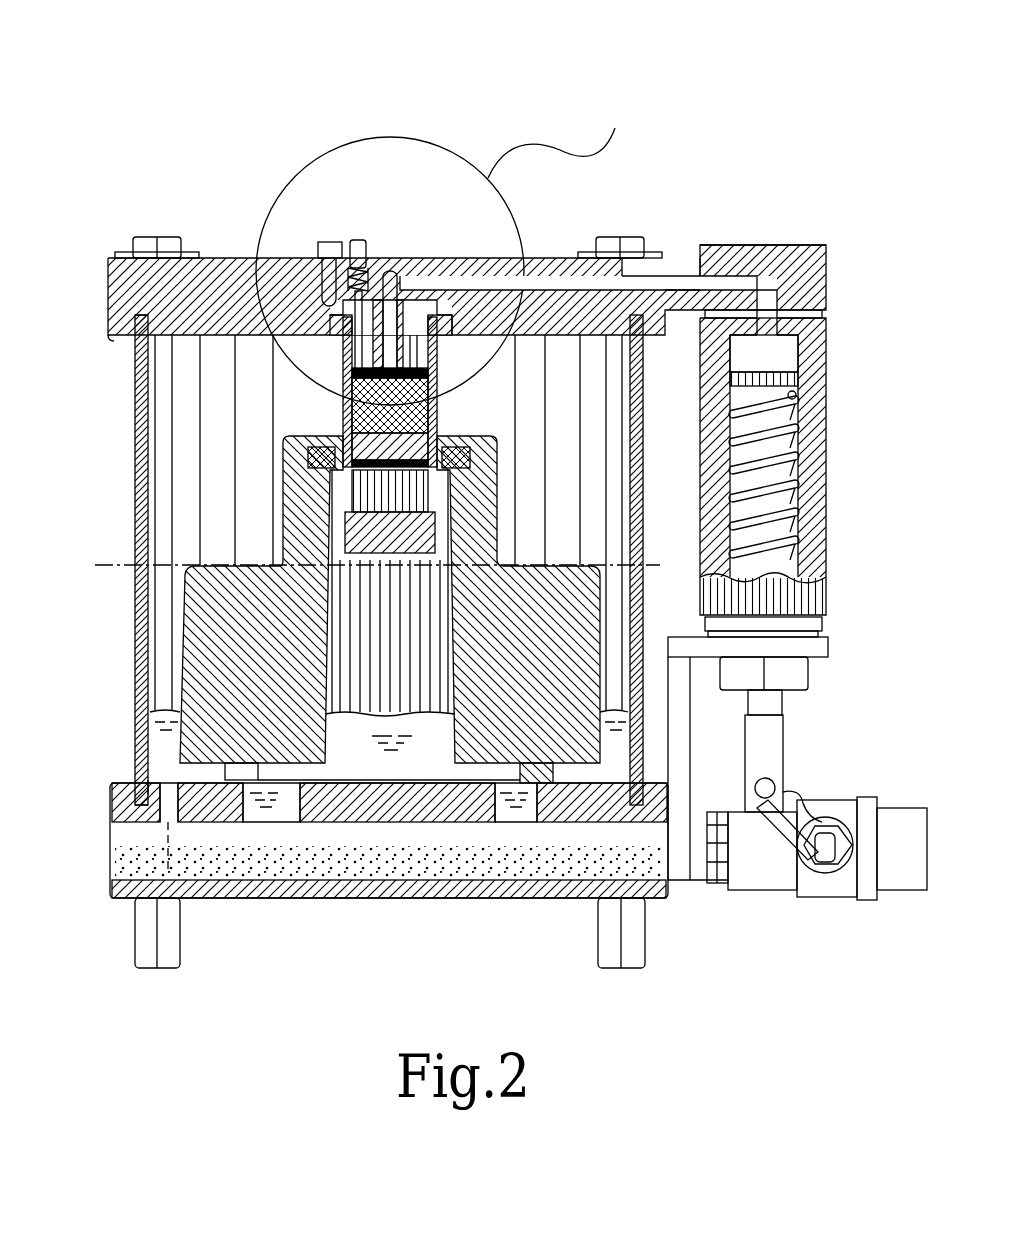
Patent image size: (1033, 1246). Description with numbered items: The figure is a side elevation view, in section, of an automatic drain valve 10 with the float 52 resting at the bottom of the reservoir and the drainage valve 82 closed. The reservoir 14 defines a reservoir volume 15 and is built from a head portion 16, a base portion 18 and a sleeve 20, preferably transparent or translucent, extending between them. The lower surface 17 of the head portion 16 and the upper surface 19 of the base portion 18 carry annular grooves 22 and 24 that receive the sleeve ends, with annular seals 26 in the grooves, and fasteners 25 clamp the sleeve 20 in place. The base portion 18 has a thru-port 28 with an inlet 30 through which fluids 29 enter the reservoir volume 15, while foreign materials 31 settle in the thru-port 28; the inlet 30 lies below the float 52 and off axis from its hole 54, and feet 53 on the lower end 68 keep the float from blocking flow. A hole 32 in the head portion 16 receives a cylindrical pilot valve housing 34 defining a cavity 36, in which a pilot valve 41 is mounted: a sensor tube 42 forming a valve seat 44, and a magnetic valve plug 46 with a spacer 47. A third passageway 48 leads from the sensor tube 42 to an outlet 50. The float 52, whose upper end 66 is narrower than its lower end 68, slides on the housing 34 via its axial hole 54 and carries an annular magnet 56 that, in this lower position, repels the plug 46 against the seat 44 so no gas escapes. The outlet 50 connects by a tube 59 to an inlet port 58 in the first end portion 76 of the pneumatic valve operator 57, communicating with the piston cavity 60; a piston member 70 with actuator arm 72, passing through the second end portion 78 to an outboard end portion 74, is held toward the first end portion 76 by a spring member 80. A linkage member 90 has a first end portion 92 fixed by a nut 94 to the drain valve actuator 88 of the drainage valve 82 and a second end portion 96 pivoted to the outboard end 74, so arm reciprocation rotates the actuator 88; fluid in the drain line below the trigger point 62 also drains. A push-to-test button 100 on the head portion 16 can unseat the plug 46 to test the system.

The automatic drain valve 10 is at (355, 88).
The reservoir 14 is at (140, 432).
The reservoir volume 15 is at (222, 340).
The head portion 16 is at (330, 252).
The lower surface of head portion 17 is at (117, 340).
The base portion 18 is at (208, 885).
The upper surface of base portion 19 is at (140, 810).
The sleeve 20 is at (137, 603).
The annular groove 22 is at (135, 345).
The annular groove 24 is at (137, 782).
The fasteners 25 is at (150, 237).
The annular seals 26 is at (142, 318).
The thru-port 28 is at (130, 852).
The fluids 29 is at (160, 712).
The inlet 30 is at (330, 830).
The foreign materials 31 is at (392, 875).
The hole 32 is at (335, 360).
The pilot valve housing 34 is at (432, 388).
The cavity 36 is at (404, 492).
The pilot valve 41 is at (405, 350).
The sensor tube 42 is at (418, 262).
The valve seat 44 is at (355, 373).
The magnetic valve plug 46 is at (355, 396).
The spacer 47 is at (430, 437).
The third passageway 48 is at (478, 275).
The outlet 50 is at (690, 290).
The float 52 is at (238, 558).
The feet 53 is at (562, 765).
The axial hole 54 is at (402, 640).
The annular magnet 56 is at (452, 455).
The pneumatic valve operator 57 is at (830, 430).
The inlet port 58 is at (735, 290).
The tube 59 is at (720, 258).
The piston cavity 60 is at (775, 352).
The trigger point 62 is at (105, 565).
The upper end of float 66 is at (472, 462).
The lower end of float 68 is at (556, 622).
The piston member 70 is at (792, 383).
The actuator arm 72 is at (770, 700).
The outboard end portion 74 is at (780, 770).
The first end portion 76 is at (810, 272).
The second end portion 78 is at (800, 600).
The spring member 80 is at (792, 472).
The drainage valve 82 is at (780, 832).
The drain valve actuator 88 is at (830, 870).
The linkage member 90 is at (845, 812).
The first end portion of linkage member 92 is at (856, 882).
The nut 94 is at (888, 875).
The second end portion of linkage member 96 is at (742, 880).
The push-to-test button 100 is at (357, 238).